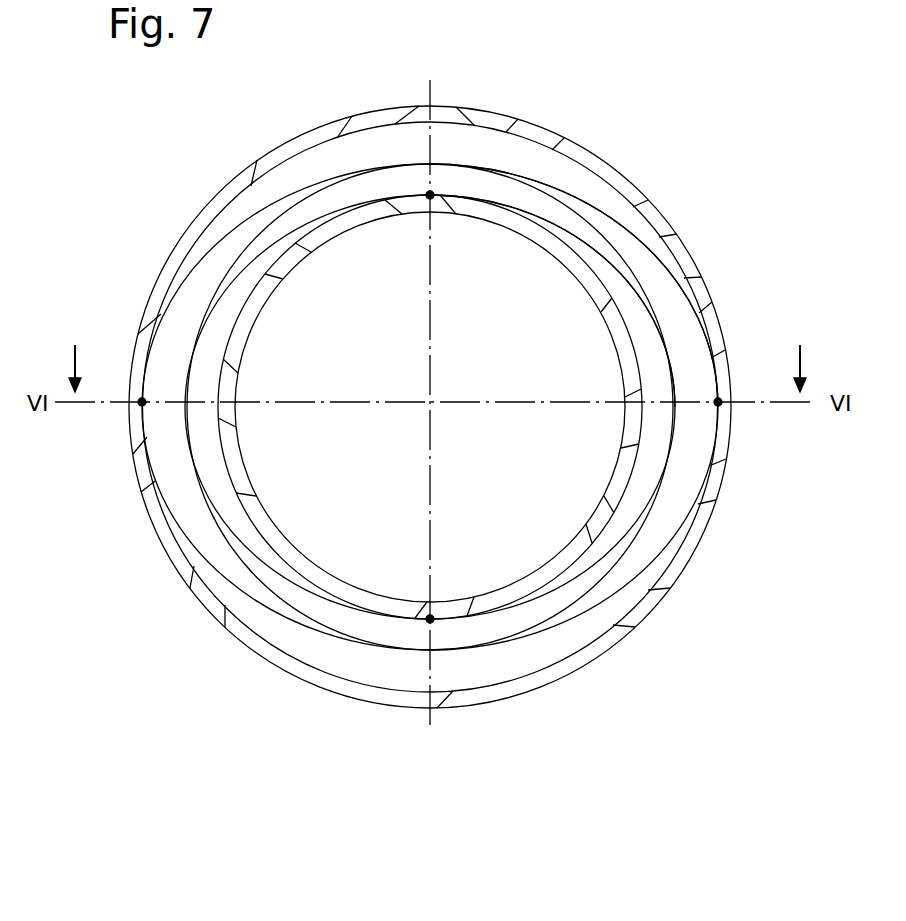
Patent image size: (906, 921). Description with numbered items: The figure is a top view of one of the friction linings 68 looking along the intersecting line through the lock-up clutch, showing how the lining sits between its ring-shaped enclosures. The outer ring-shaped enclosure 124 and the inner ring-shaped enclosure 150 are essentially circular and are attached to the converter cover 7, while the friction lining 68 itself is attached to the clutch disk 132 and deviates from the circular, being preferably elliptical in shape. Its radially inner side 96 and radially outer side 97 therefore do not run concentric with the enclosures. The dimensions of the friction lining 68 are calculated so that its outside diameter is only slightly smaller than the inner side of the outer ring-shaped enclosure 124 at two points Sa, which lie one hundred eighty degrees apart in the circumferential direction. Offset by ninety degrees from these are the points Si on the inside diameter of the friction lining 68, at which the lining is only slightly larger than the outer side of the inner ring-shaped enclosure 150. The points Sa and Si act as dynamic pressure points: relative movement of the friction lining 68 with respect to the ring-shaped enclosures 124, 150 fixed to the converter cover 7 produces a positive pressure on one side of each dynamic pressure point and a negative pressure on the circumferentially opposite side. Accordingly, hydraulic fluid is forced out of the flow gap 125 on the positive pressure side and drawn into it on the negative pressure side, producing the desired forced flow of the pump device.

The converter cover 7 is at (260, 263).
The friction lining 68 is at (577, 212).
The radially inner side 96 is at (640, 300).
The radially outer side 97 is at (657, 253).
The outer ring-shaped enclosure 124 is at (177, 247).
The flow gap 125 is at (307, 228).
The clutch disk 132 is at (515, 665).
The inner ring-shaped enclosure 150 is at (370, 213).
The dynamic pressure points on inside diameter Si is at (430, 195).
The dynamic pressure points on outside diameter Sa is at (142, 404).